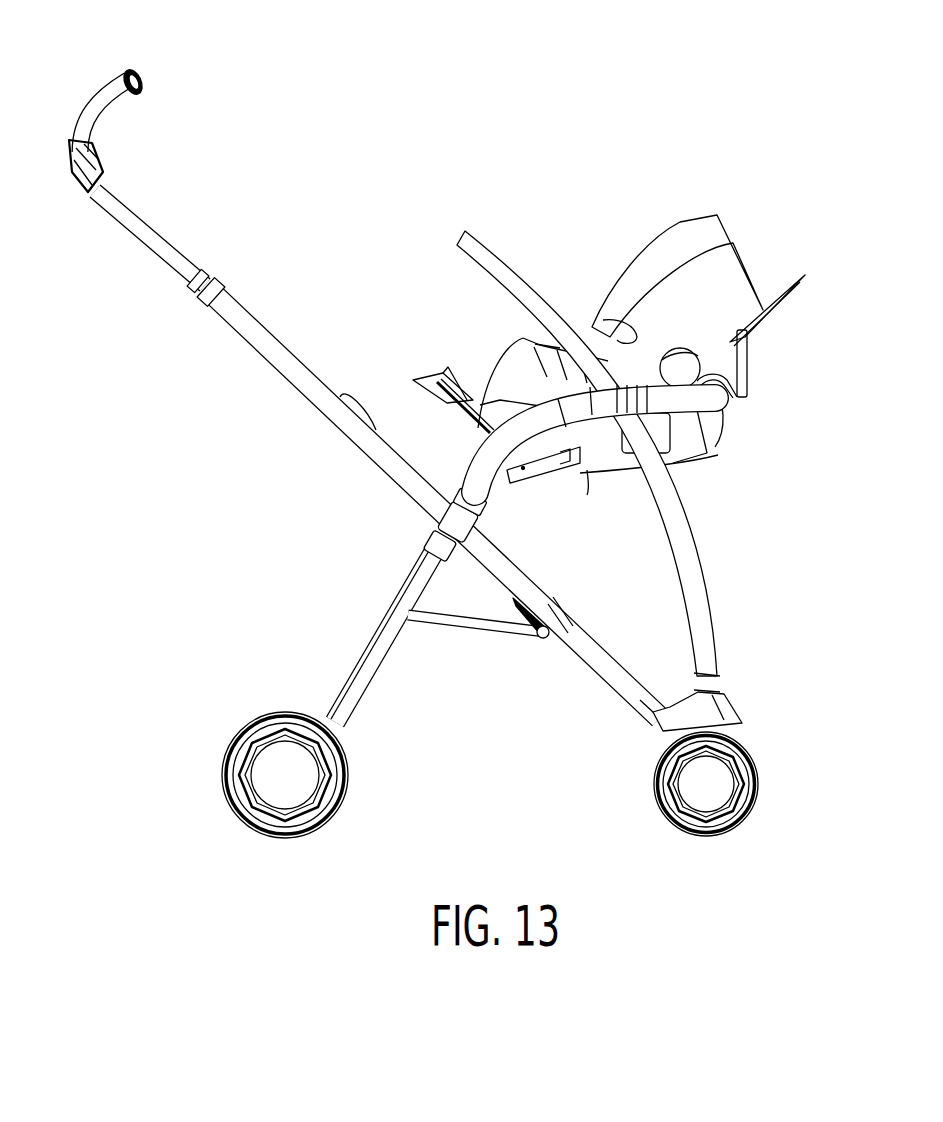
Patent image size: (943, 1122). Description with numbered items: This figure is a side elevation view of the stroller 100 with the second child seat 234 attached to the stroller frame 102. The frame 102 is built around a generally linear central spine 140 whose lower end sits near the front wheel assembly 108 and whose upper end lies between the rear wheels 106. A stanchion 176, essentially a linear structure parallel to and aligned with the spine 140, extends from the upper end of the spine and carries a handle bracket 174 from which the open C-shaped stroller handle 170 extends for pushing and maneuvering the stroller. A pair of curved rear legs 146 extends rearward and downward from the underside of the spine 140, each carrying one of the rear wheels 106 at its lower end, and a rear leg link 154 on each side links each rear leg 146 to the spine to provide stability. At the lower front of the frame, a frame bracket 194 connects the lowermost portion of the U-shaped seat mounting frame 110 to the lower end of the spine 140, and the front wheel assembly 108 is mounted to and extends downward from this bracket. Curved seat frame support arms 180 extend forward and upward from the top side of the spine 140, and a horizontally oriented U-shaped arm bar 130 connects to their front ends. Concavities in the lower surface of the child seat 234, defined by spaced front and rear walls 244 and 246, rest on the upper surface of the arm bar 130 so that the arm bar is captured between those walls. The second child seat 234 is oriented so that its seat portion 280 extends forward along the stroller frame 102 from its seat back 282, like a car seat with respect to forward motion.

The stroller 100 is at (335, 198).
The frame 102 is at (232, 294).
The rear wheels 106 is at (221, 778).
The front wheel assembly 108 is at (759, 779).
The seat mounting frame 110 is at (713, 598).
The arm bar 130 is at (729, 407).
The central spine 140 is at (260, 362).
The rear legs 146 is at (343, 680).
The rear leg link 154 is at (468, 632).
The stroller handle 170 is at (89, 93).
The handle bracket 174 is at (78, 182).
The stanchion 176 is at (141, 243).
The seat frame support arms 180 is at (530, 410).
The frame bracket 194 is at (729, 699).
The second child seat 234 is at (730, 222).
The front wall 244 is at (712, 446).
The rear wall 246 is at (740, 384).
The seat portion 280 is at (482, 435).
The seat back 282 is at (742, 363).